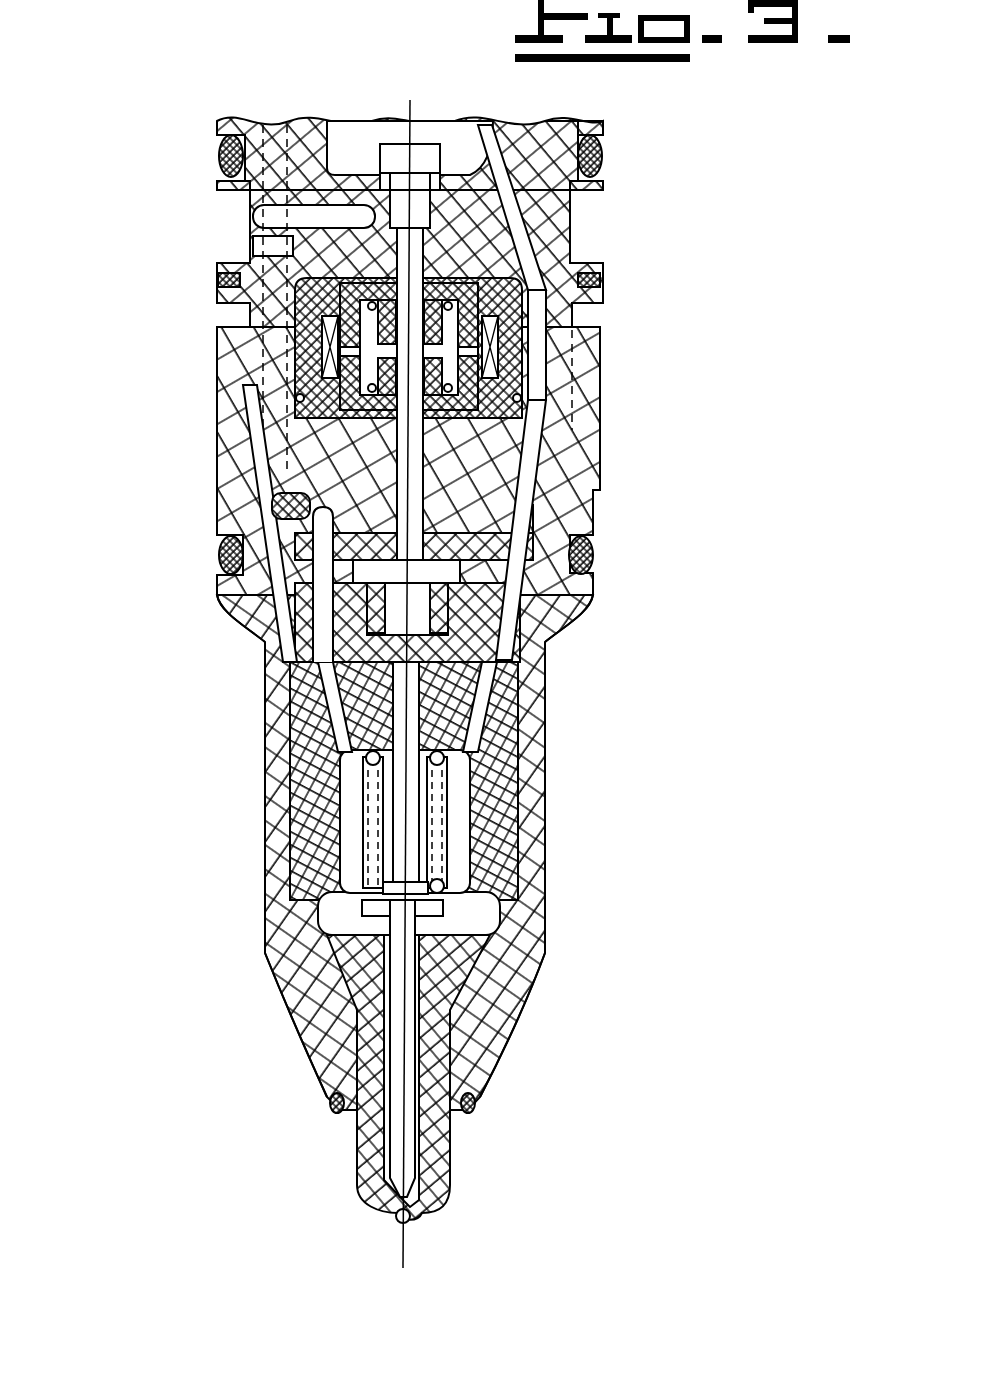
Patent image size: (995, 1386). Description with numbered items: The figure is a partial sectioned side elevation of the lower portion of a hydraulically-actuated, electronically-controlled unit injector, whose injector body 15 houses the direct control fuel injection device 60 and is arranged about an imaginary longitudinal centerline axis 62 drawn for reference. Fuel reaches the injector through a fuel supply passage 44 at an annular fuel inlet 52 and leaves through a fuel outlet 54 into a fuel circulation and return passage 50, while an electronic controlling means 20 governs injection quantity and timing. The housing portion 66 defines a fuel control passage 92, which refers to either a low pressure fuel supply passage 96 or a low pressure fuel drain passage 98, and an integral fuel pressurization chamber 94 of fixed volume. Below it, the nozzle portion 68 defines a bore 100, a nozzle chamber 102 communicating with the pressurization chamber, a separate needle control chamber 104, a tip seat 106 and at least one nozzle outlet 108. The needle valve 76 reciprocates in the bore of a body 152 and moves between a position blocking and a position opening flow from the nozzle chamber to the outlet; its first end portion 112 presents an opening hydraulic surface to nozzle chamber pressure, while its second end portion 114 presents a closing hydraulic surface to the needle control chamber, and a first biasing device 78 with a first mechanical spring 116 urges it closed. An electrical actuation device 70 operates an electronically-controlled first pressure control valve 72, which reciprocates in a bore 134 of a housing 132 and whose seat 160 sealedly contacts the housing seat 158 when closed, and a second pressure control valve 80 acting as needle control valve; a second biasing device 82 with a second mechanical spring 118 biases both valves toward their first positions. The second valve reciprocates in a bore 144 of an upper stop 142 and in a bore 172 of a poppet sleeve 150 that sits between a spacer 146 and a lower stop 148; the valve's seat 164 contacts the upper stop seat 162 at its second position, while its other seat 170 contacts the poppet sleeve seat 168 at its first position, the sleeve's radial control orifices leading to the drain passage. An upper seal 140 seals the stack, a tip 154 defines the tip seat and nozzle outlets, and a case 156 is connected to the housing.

The injector body 15 is at (265, 820).
The means for electronically controlling 20 is at (665, 160).
The fuel supply passage 44 is at (330, 247).
The fuel circulation and return passage 50 is at (300, 372).
The annular fuel inlet 52 is at (603, 223).
The fuel outlet 54 is at (575, 318).
The direct control fuel injection device 60 is at (160, 762).
The longitudinal centerline axis 62 is at (416, 104).
The housing portion 66 is at (620, 121).
The nozzle portion 68 is at (590, 750).
The electrical actuation device 70 is at (630, 356).
The first pressure control valve 72 is at (456, 121).
The needle valve 76 is at (500, 830).
The first biasing device 78 is at (495, 865).
The second pressure control valve 80 is at (448, 472).
The second biasing device 82 is at (322, 332).
The fuel control passage 92 is at (298, 211).
The fuel pressurization chamber 94 is at (314, 179).
The fuel supply passage 96 is at (252, 189).
The fuel drain passage 98 is at (262, 598).
The bore 100 is at (505, 735).
The nozzle chamber 102 is at (300, 770).
The needle control chamber 104 is at (520, 680).
The tip seat 106 is at (418, 1190).
The nozzle outlet 108 is at (398, 1222).
The first end portion 112 is at (385, 1195).
The second end portion 114 is at (292, 715).
The first mechanical spring 116 is at (448, 800).
The second mechanical spring 118 is at (560, 398).
The housing 132 is at (570, 121).
The bore 134 is at (590, 194).
The upper seal 140 is at (222, 140).
The upper stop 142 is at (535, 540).
The bore 144 is at (290, 470).
The spacer 146 is at (560, 602).
The lower stop 148 is at (558, 630).
The poppet sleeve 150 is at (592, 557).
The body 152 is at (522, 845).
The tip 154 is at (450, 1160).
The case 156 is at (518, 1005).
The seat 158 is at (600, 140).
The seat 160 is at (440, 147).
The seat 162 is at (524, 492).
The seat 164 is at (318, 500).
The seat 168 is at (228, 540).
The seat 170 is at (533, 513).
The bore 172 is at (470, 632).